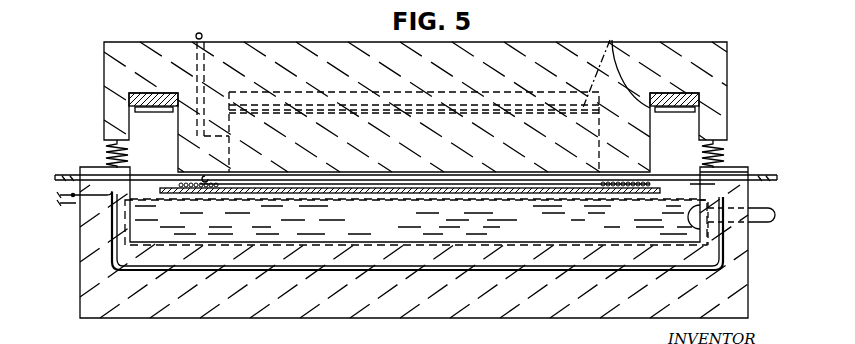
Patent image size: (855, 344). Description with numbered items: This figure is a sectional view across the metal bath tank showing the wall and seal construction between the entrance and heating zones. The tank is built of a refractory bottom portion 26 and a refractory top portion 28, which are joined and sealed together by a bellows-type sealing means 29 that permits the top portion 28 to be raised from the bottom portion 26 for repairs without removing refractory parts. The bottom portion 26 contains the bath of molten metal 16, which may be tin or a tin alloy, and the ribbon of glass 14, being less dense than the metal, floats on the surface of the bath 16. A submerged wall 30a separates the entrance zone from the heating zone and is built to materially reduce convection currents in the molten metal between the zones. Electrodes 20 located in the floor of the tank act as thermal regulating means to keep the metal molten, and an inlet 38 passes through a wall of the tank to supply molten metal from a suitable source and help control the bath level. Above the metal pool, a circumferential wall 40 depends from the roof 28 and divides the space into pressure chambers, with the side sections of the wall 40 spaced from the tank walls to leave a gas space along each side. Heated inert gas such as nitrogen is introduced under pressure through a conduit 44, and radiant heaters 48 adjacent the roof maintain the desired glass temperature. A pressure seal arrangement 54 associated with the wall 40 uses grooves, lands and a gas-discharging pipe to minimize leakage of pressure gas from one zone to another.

The refractory top portion 28 is at (136, 37).
The conduit 44 is at (202, 34).
The radiant heaters 48 is at (439, 96).
The circumferential wall 40 is at (178, 150).
The sealing means 29 is at (104, 152).
The submerged wall 30a is at (692, 196).
The ribbon of glass 14 is at (277, 194).
The bath of molten metal 16 is at (416, 222).
The refractory bottom portion 26 is at (80, 305).
The pressure seal arrangement 54 is at (176, 186).
The electrodes 20 is at (328, 270).
The inlet 38 is at (756, 210).